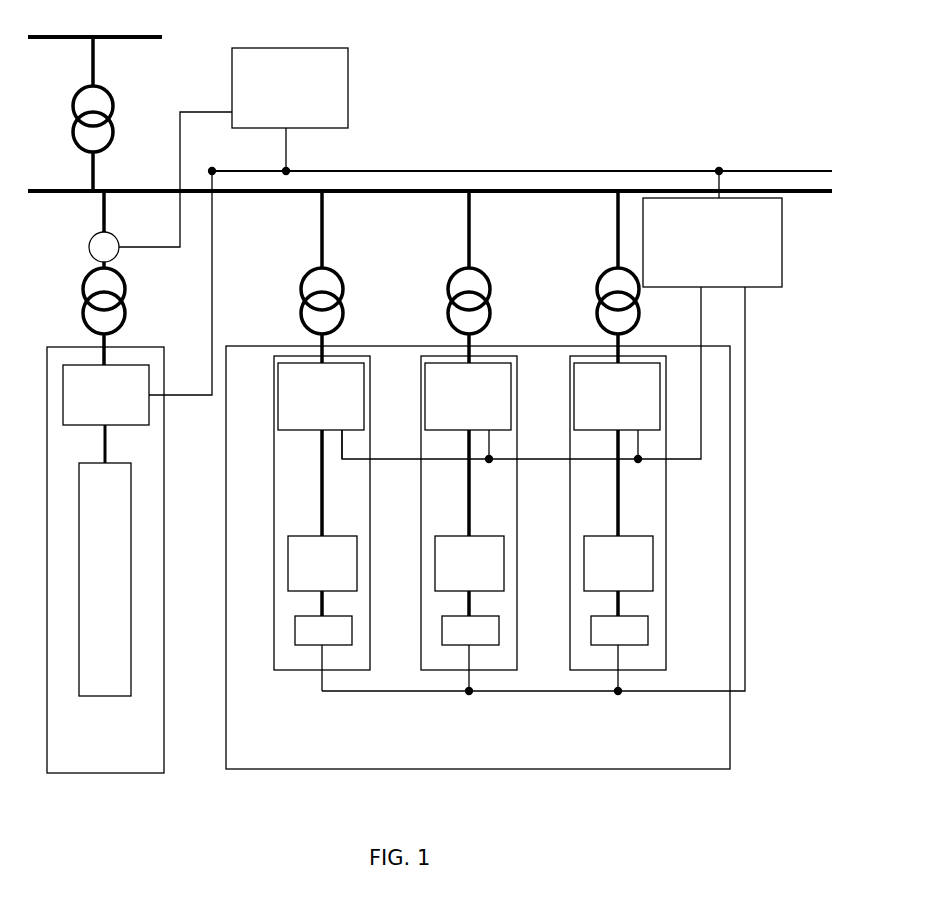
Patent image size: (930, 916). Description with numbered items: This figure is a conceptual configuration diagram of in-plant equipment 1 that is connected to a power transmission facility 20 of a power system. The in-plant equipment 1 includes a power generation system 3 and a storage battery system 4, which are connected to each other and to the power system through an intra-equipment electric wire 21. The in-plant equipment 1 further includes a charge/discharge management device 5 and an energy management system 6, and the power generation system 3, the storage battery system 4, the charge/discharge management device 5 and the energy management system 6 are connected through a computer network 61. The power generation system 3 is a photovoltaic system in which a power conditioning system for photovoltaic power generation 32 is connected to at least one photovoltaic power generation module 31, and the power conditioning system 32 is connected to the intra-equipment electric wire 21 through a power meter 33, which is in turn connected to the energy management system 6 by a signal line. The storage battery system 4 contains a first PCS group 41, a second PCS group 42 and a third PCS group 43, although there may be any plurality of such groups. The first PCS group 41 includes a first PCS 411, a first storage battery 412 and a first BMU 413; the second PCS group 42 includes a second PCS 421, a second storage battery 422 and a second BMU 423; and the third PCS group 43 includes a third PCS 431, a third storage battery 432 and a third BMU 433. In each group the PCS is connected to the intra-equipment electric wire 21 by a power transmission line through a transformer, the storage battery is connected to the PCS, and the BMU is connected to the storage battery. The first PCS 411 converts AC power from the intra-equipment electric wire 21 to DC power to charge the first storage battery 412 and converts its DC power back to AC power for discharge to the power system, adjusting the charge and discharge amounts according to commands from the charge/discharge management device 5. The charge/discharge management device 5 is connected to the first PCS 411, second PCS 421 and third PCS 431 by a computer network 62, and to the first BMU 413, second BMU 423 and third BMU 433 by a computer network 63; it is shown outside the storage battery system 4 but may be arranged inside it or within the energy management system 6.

The in-plant equipment 1 is at (488, 146).
The power generation system 3 is at (129, 499).
The storage battery system 4 is at (573, 770).
The charge/discharge management device 5 is at (782, 249).
The energy management system 6 is at (348, 85).
The power transmission facility 20 is at (150, 39).
The intra-equipment electric wire 21 is at (129, 189).
The photovoltaic power generation module 31 is at (107, 697).
The power conditioning system for photovoltaic power generation 32 is at (149, 417).
The power meter 33 is at (113, 232).
The first PCS group 41 is at (311, 441).
The second PCS group 42 is at (458, 441).
The third PCS group 43 is at (606, 441).
The computer network 61 is at (391, 168).
The computer network 62 is at (689, 462).
The computer network 63 is at (680, 693).
The first PCS 411 is at (278, 396).
The first storage battery 412 is at (288, 566).
The first BMU 413 is at (295, 631).
The second PCS 421 is at (425, 396).
The second storage battery 422 is at (435, 566).
The second BMU 423 is at (442, 631).
The third PCS 431 is at (574, 396).
The third storage battery 432 is at (584, 566).
The third BMU 433 is at (591, 631).